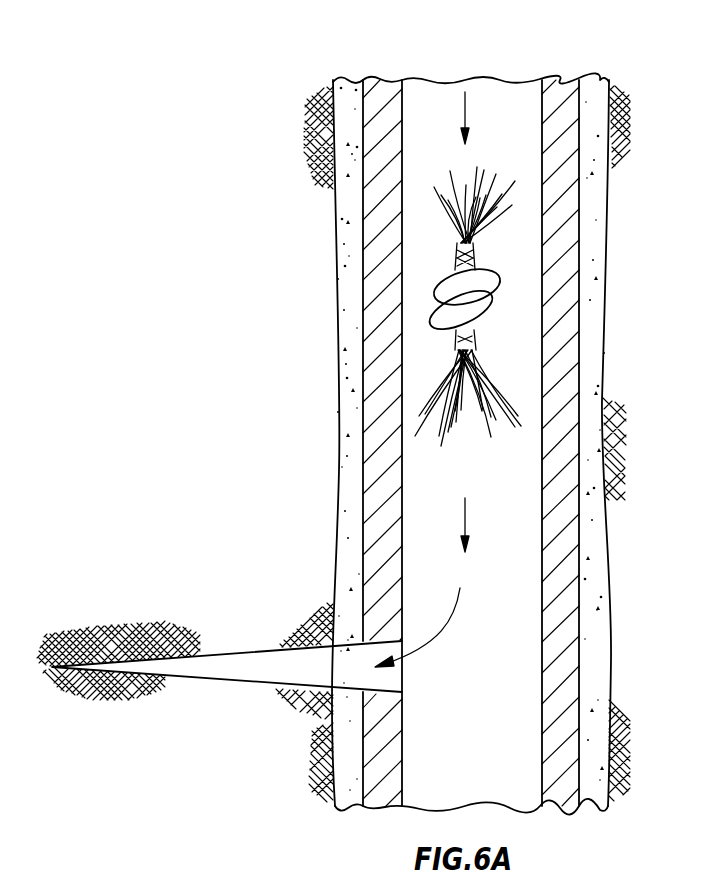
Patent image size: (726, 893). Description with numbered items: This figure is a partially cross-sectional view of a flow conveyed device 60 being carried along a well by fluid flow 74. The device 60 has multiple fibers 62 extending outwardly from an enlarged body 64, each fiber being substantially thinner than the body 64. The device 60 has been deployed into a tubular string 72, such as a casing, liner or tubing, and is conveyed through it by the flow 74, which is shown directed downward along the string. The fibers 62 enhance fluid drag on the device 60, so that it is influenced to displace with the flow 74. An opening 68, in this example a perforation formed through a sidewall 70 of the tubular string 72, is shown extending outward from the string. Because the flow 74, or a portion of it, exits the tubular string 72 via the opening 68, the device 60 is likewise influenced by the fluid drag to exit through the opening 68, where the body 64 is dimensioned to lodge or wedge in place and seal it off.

The device 60 is at (459, 293).
The fibers 62 is at (425, 224).
The body 64 is at (437, 318).
The opening 68 is at (392, 680).
The sidewall 70 is at (378, 545).
The tubular string 72 is at (580, 615).
The fluid flow 74 is at (462, 100).